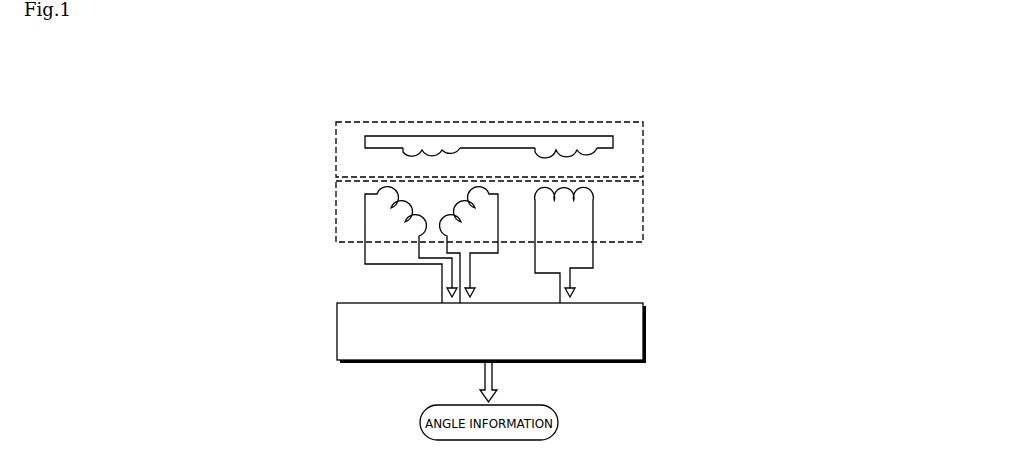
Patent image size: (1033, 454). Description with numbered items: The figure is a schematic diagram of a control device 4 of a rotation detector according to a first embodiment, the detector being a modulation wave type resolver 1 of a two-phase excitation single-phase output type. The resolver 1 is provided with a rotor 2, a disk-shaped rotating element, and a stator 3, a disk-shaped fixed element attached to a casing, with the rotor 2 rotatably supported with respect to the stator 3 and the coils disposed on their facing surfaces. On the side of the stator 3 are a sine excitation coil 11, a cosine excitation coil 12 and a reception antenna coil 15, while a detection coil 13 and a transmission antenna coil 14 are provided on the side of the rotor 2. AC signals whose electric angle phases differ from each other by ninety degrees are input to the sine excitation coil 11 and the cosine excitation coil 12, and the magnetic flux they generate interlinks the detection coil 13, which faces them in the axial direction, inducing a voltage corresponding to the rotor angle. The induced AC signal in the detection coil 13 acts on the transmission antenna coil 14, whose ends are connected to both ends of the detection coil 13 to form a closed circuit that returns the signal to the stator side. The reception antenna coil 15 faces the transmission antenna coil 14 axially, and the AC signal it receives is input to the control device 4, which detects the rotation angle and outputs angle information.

The resolver 1 is at (672, 104).
The rotor 2 is at (643, 138).
The stator 3 is at (643, 196).
The control device 4 is at (646, 331).
The sine excitation coil 11 is at (379, 190).
The cosine excitation coil 12 is at (484, 190).
The detection coil 13 is at (402, 157).
The transmission antenna coil 14 is at (535, 153).
The reception antenna coil 15 is at (597, 195).